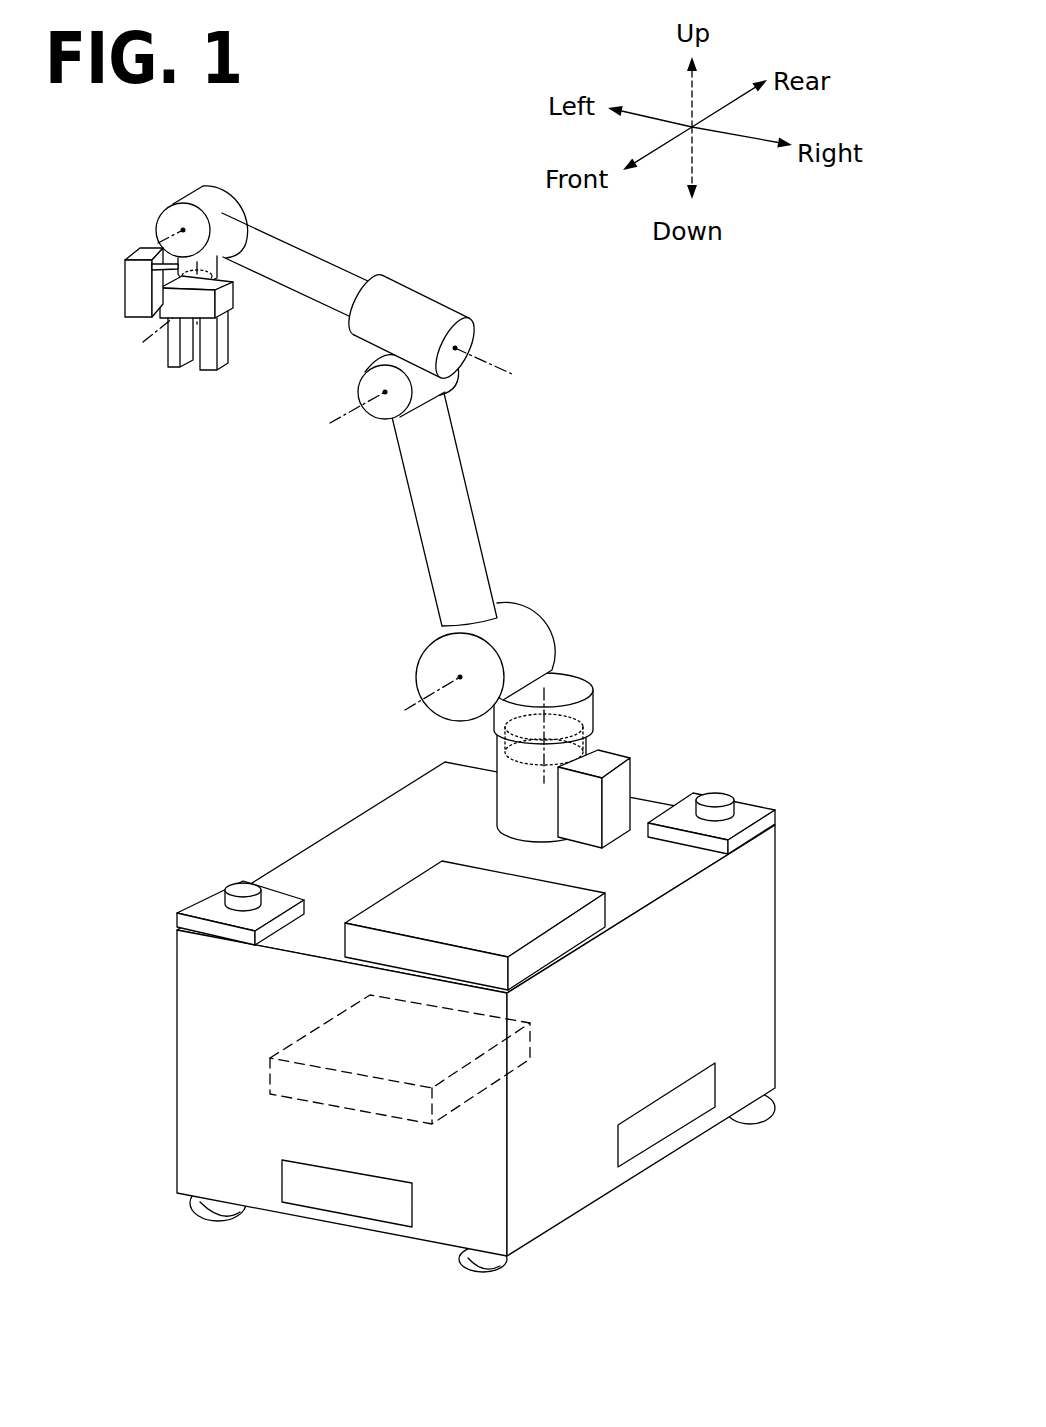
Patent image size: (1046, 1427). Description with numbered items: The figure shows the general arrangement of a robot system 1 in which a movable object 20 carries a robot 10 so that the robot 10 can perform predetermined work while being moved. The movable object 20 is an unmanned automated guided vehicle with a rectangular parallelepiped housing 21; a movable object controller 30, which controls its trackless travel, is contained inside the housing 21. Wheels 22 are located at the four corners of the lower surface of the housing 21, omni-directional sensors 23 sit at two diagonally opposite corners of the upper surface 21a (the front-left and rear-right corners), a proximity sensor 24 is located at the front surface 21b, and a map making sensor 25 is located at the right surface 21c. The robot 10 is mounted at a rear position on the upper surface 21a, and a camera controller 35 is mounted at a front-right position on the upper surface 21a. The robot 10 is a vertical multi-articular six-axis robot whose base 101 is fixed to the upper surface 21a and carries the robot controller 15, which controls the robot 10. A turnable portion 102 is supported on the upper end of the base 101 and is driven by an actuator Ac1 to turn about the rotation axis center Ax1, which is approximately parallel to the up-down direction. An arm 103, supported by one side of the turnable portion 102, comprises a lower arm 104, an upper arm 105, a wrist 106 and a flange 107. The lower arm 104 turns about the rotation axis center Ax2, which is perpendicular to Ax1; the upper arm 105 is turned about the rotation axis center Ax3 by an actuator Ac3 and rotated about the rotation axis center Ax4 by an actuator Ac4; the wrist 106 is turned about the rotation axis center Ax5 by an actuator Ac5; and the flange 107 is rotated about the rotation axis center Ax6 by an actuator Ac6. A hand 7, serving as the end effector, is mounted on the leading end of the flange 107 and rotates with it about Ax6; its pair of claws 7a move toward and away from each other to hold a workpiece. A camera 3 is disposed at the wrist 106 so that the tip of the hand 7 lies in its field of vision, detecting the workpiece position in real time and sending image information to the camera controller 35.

The robot system 1 is at (644, 337).
The robot 10 is at (559, 559).
The movable object 20 is at (213, 772).
The housing 21 is at (786, 974).
The upper surface 21a is at (375, 830).
The front surface 21b is at (272, 1135).
The right surface 21c is at (723, 1027).
The wheels 22 is at (200, 1208).
The omni-directional sensors 23 is at (238, 889).
The proximity sensor 24 is at (318, 1193).
The map making sensor 25 is at (668, 1123).
The movable object controller 30 is at (270, 1077).
The camera controller 35 is at (565, 945).
The robot controller 15 is at (622, 785).
The base 101 is at (508, 808).
The turnable portion 102 is at (590, 712).
The arm 103 is at (318, 505).
The lower arm 104 is at (457, 486).
The upper arm 105 is at (316, 268).
The wrist 106 is at (215, 262).
The flange 107 is at (218, 286).
The camera 3 is at (125, 287).
The hand 7 is at (185, 396).
The claws 7a is at (175, 355).
The actuator Ac1 is at (498, 745).
The actuator Ac3 is at (368, 384).
The actuator Ac4 is at (418, 302).
The actuator Ac5 is at (208, 203).
The actuator Ac6 is at (215, 274).
The rotation axis center Ax1 is at (545, 698).
The rotation axis center Ax2 is at (415, 712).
The rotation axis center Ax3 is at (370, 408).
The rotation axis center Ax4 is at (487, 350).
The rotation axis center Ax5 is at (152, 238).
The rotation axis center Ax6 is at (147, 309).